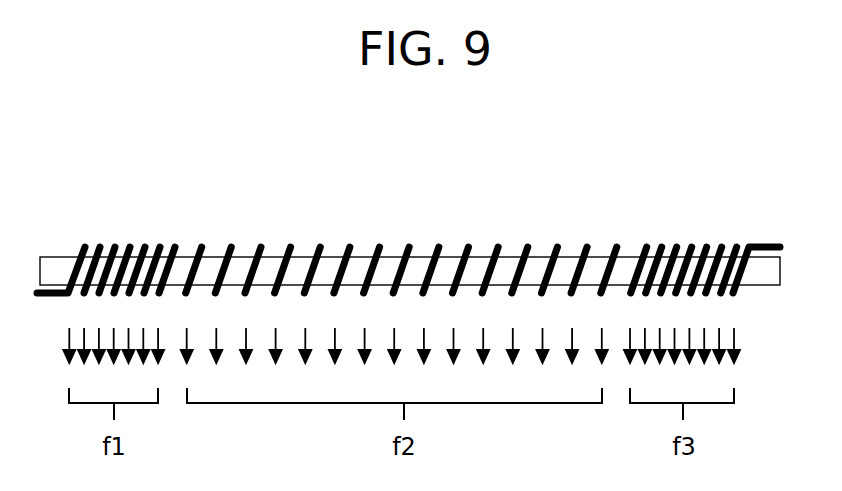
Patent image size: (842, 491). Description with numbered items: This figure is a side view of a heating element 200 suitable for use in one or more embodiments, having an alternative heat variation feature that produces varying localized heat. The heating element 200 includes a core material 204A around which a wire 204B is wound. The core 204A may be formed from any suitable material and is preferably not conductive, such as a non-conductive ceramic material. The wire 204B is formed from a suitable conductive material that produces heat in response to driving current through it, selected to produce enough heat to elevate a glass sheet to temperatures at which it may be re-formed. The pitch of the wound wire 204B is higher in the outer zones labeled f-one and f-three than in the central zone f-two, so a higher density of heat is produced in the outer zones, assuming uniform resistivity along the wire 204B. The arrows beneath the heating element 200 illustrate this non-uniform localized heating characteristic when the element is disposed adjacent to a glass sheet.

The heating element 200 is at (400, 150).
The core material 204A is at (183, 267).
The wire 204B is at (318, 267).